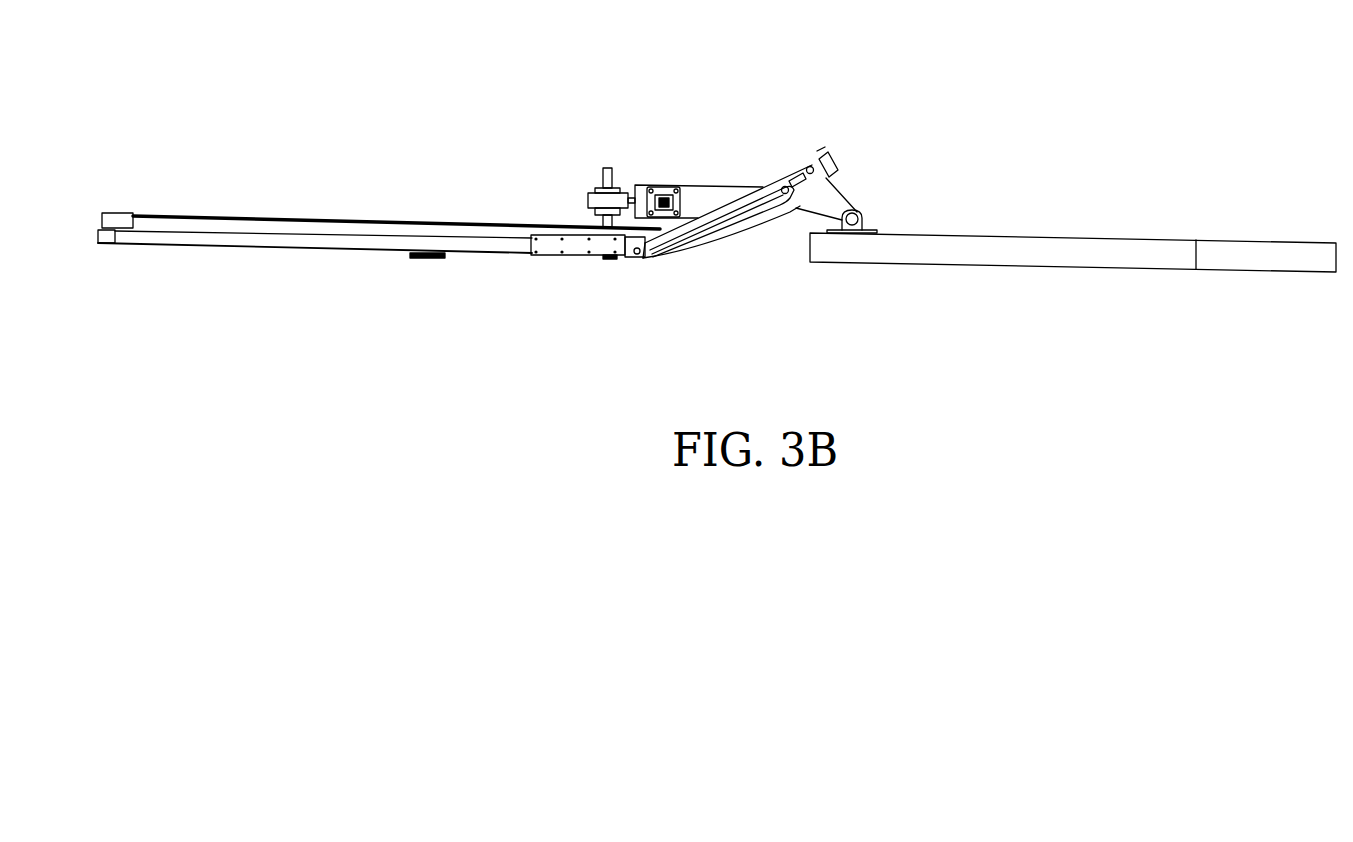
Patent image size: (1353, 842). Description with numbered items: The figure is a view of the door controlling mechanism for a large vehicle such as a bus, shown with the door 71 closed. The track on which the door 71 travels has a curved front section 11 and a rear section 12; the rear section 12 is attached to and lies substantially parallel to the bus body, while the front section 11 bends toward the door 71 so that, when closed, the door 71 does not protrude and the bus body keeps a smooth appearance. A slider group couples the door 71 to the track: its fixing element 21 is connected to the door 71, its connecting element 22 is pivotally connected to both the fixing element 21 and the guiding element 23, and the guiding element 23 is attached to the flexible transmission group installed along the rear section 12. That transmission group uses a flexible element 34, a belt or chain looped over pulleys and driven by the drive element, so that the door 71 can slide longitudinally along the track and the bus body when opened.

The front section 11 is at (815, 160).
The rear section 12 is at (290, 218).
The fixing element 21 is at (852, 196).
The connecting element 22 is at (710, 232).
The guiding element 23 is at (570, 248).
The flexible element 34 is at (355, 248).
The door 71 is at (1063, 267).